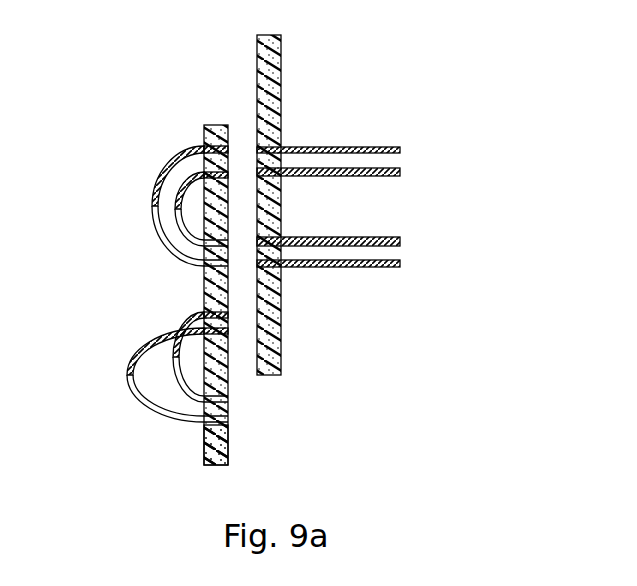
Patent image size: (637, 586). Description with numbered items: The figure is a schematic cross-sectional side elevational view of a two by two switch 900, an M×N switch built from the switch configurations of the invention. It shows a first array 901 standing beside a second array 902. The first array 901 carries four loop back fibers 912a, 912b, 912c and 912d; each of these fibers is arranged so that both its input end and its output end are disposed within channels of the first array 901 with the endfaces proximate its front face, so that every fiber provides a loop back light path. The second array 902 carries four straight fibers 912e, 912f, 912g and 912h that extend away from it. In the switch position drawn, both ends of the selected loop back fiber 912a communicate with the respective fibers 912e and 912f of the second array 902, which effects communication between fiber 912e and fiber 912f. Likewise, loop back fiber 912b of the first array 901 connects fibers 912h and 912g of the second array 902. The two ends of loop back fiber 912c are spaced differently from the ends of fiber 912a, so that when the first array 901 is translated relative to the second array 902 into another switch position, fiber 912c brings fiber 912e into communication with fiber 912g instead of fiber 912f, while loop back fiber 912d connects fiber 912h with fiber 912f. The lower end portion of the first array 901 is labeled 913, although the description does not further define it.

The 2×2 switch 900 is at (326, 72).
The first array 901 is at (202, 438).
The second array 902 is at (265, 375).
The substrate end portion 913 is at (225, 455).
The loop back fiber 912a is at (158, 172).
The loop back fiber 912b is at (177, 218).
The loop back fiber 912c is at (183, 320).
The loop back fiber 912d is at (128, 386).
The fiber of the second array 912e is at (355, 146).
The fiber of the second array 912f is at (372, 268).
The fiber of the second array 912g is at (392, 241).
The fiber of the second array 912h is at (393, 173).